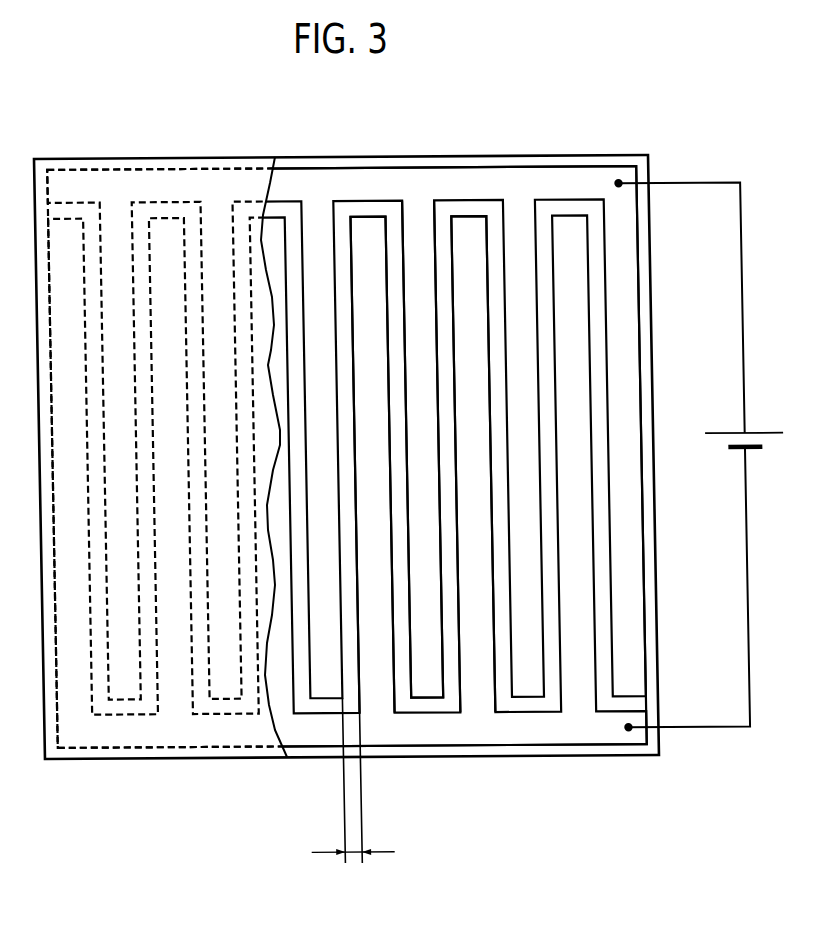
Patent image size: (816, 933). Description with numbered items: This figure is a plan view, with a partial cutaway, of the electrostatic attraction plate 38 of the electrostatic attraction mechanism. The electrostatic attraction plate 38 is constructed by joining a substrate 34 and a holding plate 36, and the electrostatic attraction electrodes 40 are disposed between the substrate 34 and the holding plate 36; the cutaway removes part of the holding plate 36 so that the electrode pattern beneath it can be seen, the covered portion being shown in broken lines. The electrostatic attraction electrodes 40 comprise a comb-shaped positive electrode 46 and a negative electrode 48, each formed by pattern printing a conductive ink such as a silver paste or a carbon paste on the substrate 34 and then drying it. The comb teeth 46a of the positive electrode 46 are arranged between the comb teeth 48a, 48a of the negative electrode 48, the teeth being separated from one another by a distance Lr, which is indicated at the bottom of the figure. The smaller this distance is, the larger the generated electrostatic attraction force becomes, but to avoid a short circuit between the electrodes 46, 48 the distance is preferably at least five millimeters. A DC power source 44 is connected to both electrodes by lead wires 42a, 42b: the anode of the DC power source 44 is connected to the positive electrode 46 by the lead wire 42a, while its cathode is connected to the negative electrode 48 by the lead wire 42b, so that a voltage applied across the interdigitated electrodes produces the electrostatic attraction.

The substrate 34 is at (478, 755).
The holding plate 36 is at (200, 180).
The electrostatic attraction plate 38 is at (128, 125).
The electrostatic attraction electrodes 40 is at (650, 700).
The lead wire 42a is at (741, 257).
The lead wire 42b is at (747, 513).
The DC power source 44 is at (732, 432).
The positive electrode 46 is at (568, 182).
The comb teeth of the positive electrode 46a is at (423, 690).
The negative electrode 48 is at (578, 730).
The comb teeth of the negative electrode 48a is at (367, 228).